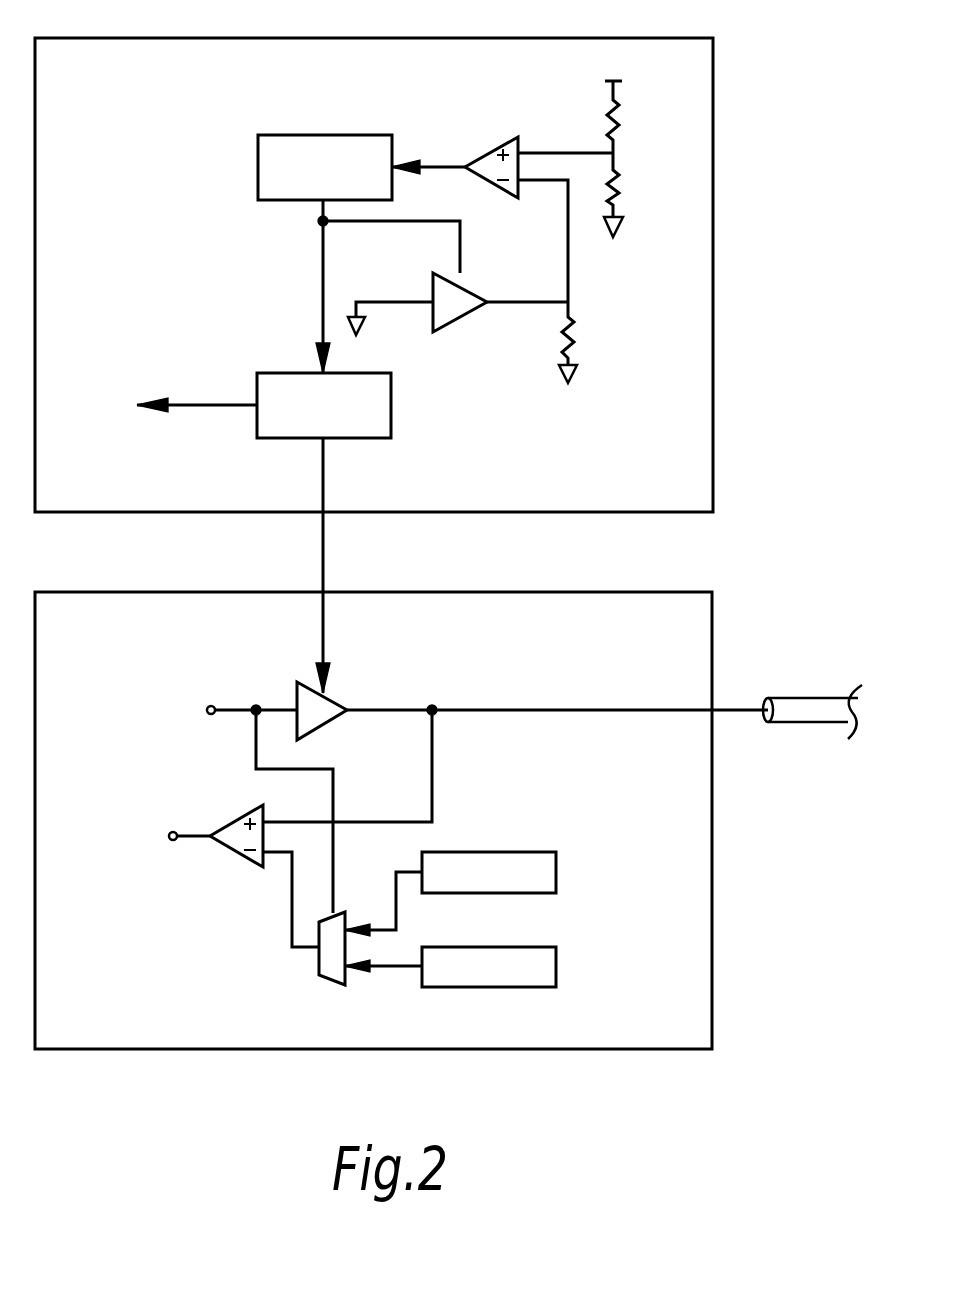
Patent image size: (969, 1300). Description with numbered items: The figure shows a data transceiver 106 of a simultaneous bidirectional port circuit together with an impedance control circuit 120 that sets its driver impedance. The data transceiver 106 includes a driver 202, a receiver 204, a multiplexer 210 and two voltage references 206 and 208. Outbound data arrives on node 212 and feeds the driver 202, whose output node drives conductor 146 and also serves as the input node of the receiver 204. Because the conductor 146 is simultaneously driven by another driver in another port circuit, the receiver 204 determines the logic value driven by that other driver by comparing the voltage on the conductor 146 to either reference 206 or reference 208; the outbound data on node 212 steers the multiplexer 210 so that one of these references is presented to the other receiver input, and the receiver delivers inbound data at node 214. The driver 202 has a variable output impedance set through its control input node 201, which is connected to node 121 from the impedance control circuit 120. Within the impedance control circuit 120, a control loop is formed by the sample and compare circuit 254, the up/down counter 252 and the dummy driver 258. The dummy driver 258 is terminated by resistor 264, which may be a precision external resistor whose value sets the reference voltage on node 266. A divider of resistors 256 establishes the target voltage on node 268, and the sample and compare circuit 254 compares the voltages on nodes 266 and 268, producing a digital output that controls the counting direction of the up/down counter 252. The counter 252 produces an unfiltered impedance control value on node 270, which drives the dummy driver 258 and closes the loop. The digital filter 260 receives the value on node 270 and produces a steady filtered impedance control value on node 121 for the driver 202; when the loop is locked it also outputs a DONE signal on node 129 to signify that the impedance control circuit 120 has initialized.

The impedance control circuit 120 is at (128, 36).
The data transceiver 106 is at (150, 591).
The up/down counter 252 is at (283, 133).
The sample and compare circuit 254 is at (483, 151).
The resistor voltage divider 256 is at (620, 115).
The node 268 is at (532, 153).
The node 270 is at (322, 240).
The dummy driver 258 is at (431, 283).
The node 266 is at (509, 302).
The resistor 264 is at (565, 333).
The digital filter 260 is at (368, 373).
The node 129 is at (186, 402).
The node 121 is at (320, 543).
The node 212 is at (207, 706).
The driver 202 is at (296, 693).
The control input node 201 is at (328, 692).
The conductor 146 is at (794, 697).
The inbound data terminal 214 is at (170, 831).
The receiver 204 is at (235, 855).
The voltage reference 206 is at (541, 852).
The voltage reference 208 is at (541, 947).
The multiplexer 210 is at (325, 981).